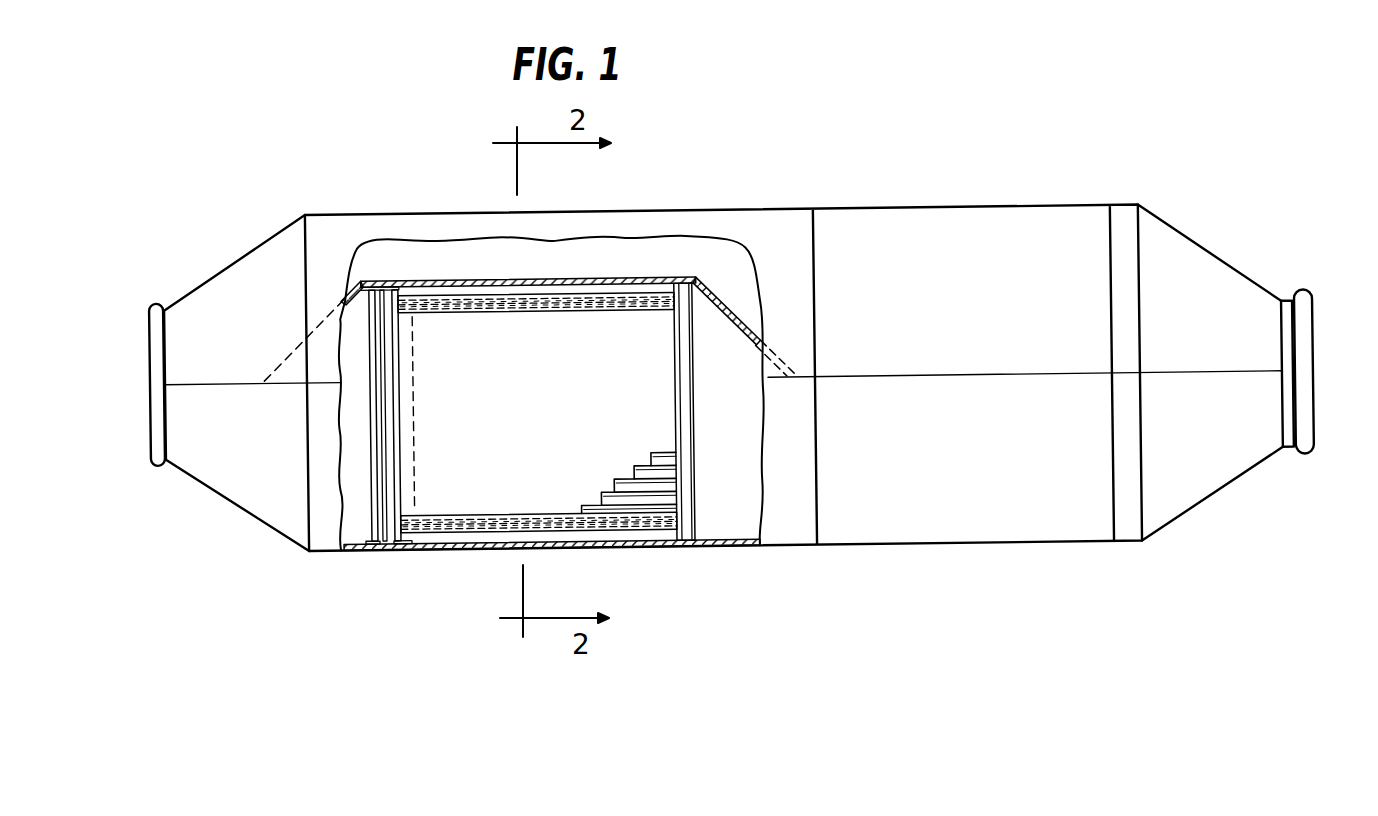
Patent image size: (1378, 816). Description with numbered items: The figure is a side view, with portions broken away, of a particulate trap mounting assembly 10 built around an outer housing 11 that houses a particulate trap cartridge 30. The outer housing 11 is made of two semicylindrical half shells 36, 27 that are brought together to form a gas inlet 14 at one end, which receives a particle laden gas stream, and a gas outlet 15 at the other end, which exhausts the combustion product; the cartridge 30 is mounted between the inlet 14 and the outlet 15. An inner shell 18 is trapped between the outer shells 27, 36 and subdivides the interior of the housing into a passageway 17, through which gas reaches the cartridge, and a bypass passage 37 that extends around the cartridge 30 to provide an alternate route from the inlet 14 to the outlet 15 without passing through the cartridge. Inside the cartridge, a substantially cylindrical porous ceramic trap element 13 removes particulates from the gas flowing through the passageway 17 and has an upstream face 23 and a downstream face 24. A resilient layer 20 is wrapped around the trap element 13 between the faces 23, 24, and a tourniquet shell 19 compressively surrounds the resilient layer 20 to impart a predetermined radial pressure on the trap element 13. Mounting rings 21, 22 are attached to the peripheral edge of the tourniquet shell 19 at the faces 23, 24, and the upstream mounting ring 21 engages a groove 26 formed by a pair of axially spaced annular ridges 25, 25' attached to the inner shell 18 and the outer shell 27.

The particulate trap mounting assembly 10 is at (801, 184).
The outer housing 11 is at (864, 215).
The trap element 13 is at (650, 504).
The gas inlet 14 is at (149, 438).
The gas outlet 15 is at (1312, 433).
The passageway 17 is at (738, 508).
The inner shell 18 is at (621, 284).
The tourniquet shell 19 is at (451, 534).
The resilient layer 20 is at (466, 302).
The upstream mounting ring 21 is at (391, 292).
The mounting ring 22 is at (676, 288).
The upstream face 23 is at (399, 459).
The downstream face 24 is at (676, 440).
The annular ridge 25 is at (358, 453).
The annular ridge 25' is at (412, 579).
The groove 26 is at (384, 545).
The outer shell 27 is at (705, 553).
The ceramic cartridge 30 is at (511, 484).
The outer shell 36 is at (320, 212).
The bypass passage 37 is at (568, 258).